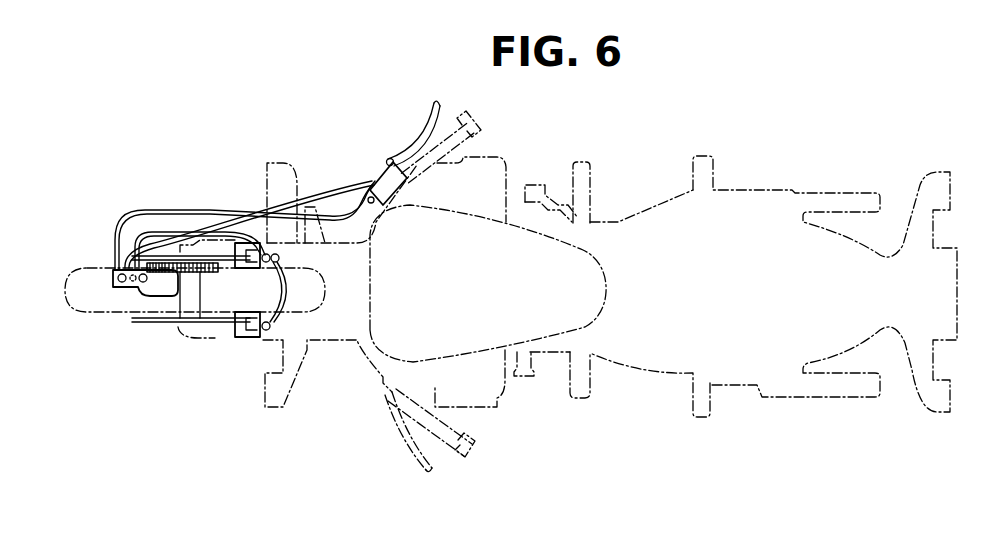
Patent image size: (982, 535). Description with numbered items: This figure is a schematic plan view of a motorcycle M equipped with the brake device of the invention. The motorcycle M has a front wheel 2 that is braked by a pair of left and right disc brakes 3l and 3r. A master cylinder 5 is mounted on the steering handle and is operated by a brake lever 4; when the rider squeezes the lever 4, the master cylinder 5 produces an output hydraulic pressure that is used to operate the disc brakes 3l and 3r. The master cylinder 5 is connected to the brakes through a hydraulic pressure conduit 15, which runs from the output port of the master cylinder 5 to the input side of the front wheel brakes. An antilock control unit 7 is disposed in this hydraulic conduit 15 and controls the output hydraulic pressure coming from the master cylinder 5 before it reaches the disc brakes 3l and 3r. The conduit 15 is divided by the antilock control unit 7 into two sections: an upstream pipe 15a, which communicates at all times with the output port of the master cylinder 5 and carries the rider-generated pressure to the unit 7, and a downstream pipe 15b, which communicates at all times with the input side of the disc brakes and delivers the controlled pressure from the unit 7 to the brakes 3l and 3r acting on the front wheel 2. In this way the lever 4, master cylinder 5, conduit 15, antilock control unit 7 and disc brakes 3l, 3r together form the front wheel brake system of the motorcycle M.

The front wheel 2 is at (79, 314).
The antilock control unit 7 is at (157, 291).
The right disc brake 3r is at (233, 268).
The left disc brake 3l is at (229, 329).
The hydraulic pressure conduit 15 is at (245, 226).
The upstream pipe 15a is at (333, 210).
The downstream pipe 15b is at (272, 254).
The master cylinder 5 is at (376, 169).
The brake lever 4 is at (424, 152).
The motorcycle M is at (630, 208).